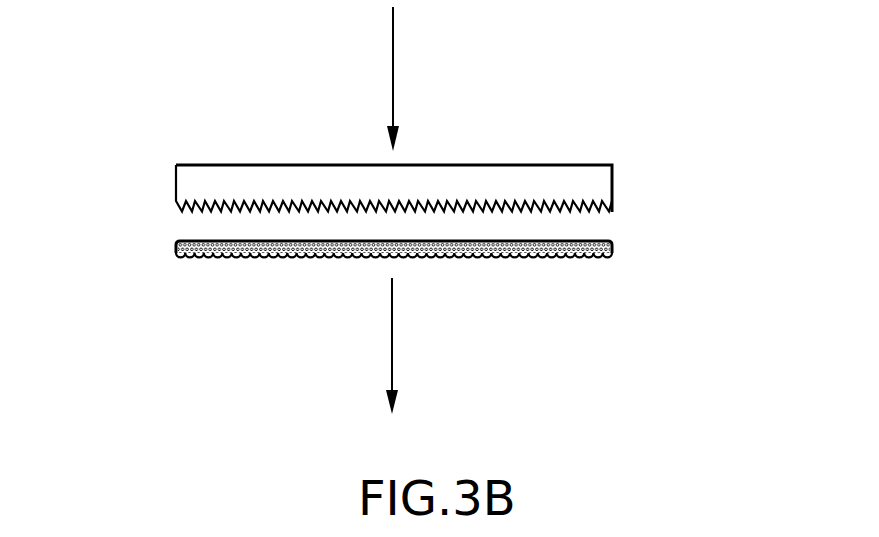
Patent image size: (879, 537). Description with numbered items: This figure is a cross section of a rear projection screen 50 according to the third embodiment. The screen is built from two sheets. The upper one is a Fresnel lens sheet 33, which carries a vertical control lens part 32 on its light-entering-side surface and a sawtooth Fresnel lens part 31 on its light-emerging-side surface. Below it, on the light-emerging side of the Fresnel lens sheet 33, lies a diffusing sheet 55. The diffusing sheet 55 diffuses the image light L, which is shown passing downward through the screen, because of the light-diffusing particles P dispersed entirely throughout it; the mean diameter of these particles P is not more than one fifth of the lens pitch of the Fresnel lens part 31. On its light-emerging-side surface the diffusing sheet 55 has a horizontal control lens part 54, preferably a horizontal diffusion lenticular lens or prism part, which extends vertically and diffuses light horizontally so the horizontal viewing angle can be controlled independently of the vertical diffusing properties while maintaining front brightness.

The rear projection screen 50 is at (584, 126).
The Fresnel lens sheet 33 is at (712, 113).
The vertical control lens part 32 is at (583, 167).
The Fresnel lens part 31 is at (581, 212).
The diffusing sheet 55 is at (632, 252).
The horizontal control lens part 54 is at (583, 258).
The image light L is at (393, 78).
The light-diffusing particles P is at (476, 259).